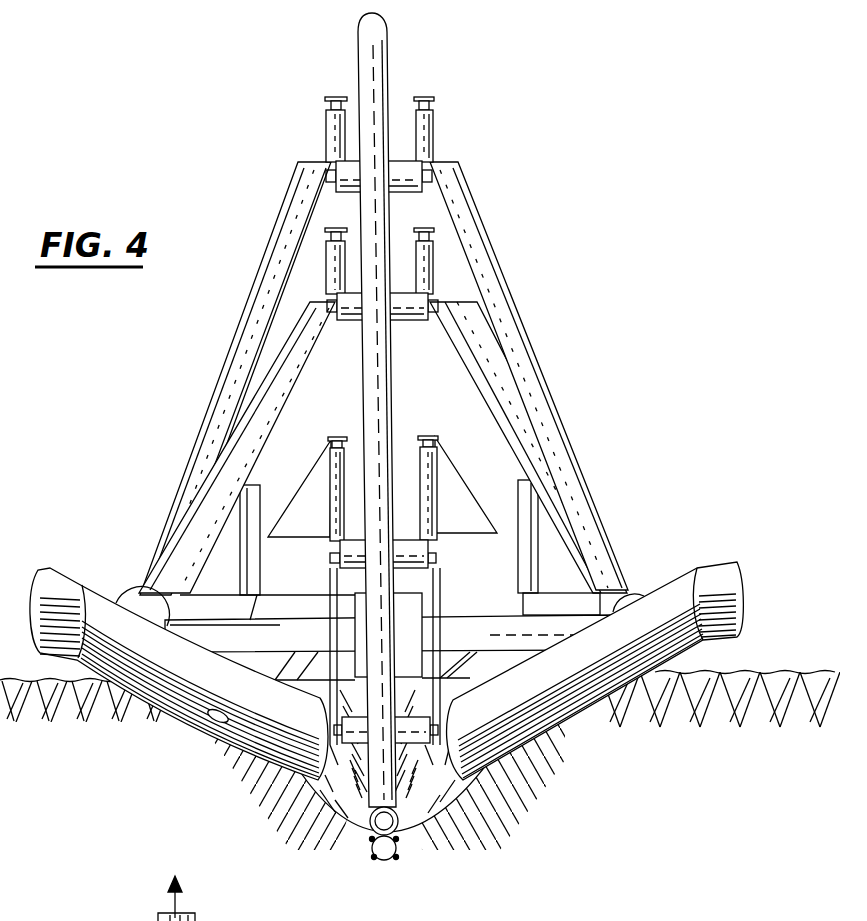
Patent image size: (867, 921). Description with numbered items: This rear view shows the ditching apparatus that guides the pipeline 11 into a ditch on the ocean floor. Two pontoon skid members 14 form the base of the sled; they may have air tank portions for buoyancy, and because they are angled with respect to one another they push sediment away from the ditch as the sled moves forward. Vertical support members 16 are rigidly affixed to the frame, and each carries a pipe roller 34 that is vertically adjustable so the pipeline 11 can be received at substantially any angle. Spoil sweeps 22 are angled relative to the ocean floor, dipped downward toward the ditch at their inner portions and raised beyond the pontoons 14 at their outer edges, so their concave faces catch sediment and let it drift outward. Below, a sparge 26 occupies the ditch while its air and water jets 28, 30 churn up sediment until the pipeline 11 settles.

The pipeline 11 is at (396, 398).
The pontoon skid member 14 is at (386, 657).
The vertical support member 16 is at (240, 373).
The spoil sweep 22 is at (212, 720).
The sparge 26 is at (402, 855).
The air and water jet 28 is at (405, 838).
The air and water jet 30 is at (370, 842).
The pipe roller 34 is at (412, 174).